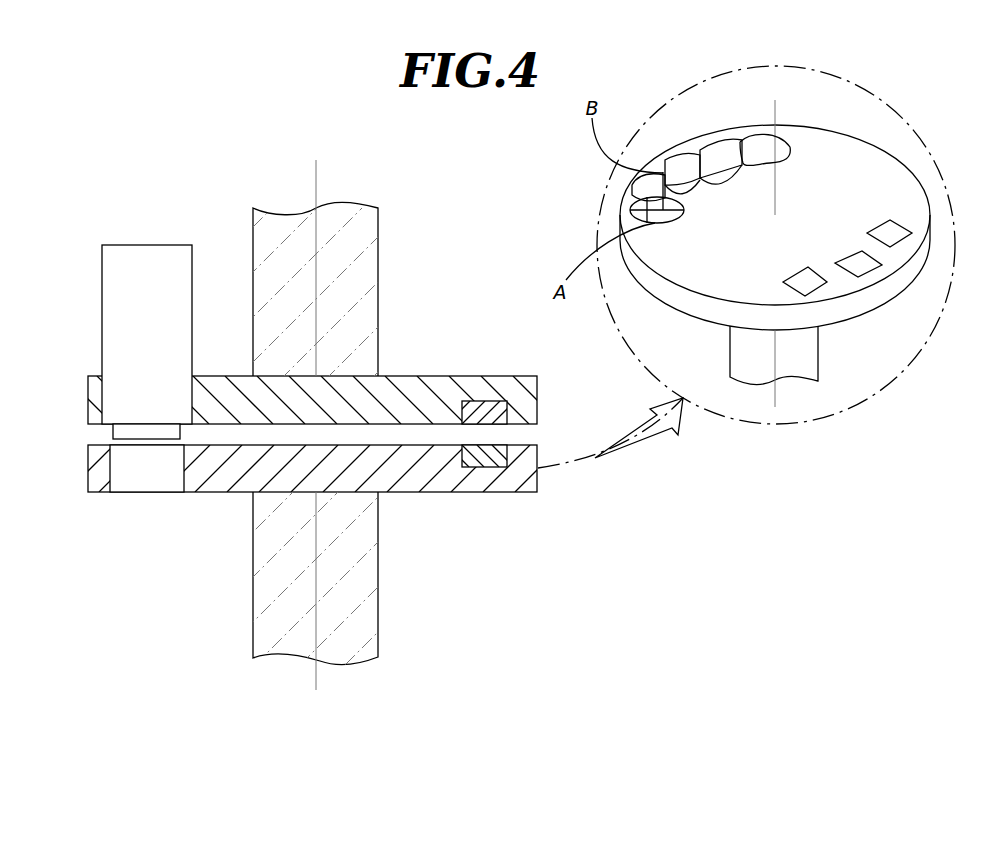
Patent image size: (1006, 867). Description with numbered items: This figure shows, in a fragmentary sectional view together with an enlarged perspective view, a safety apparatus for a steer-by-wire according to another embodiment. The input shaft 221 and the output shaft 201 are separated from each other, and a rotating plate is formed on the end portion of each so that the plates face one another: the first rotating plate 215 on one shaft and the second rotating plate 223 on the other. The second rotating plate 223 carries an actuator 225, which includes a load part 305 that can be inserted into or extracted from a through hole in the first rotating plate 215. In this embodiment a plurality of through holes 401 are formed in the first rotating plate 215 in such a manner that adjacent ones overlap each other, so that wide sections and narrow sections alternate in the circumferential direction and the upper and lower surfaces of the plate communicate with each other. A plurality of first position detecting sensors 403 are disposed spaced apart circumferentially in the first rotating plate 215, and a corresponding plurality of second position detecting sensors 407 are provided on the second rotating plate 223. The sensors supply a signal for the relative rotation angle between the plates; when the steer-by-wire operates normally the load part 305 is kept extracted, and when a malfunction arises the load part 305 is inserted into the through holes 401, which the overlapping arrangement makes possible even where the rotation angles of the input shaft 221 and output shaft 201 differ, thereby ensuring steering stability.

The output shaft 201 is at (373, 627).
The first rotating plate 215 is at (416, 492).
The input shaft 221 is at (373, 268).
The second rotating plate 223 is at (431, 376).
The actuator 225 is at (148, 250).
The load part 305 is at (112, 428).
The through holes 401 is at (140, 487).
The first position detecting sensors 403 is at (482, 467).
The second position detecting sensors 407 is at (482, 402).